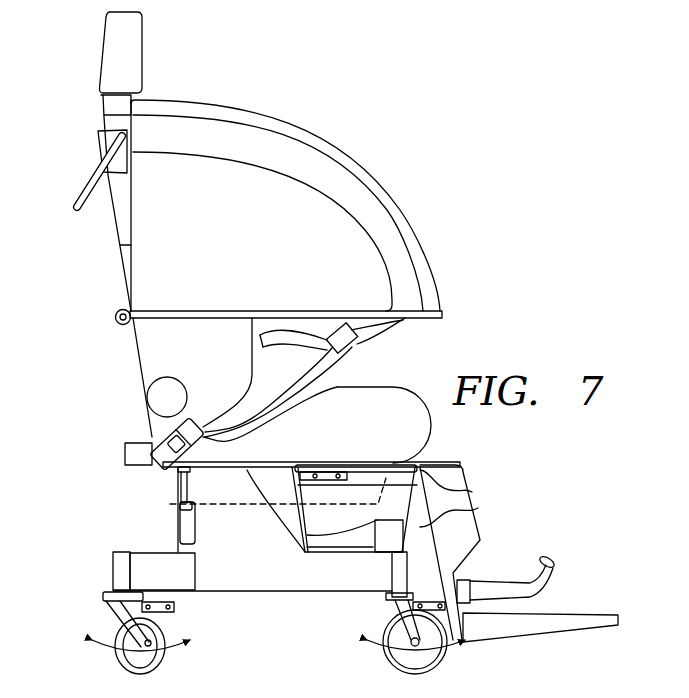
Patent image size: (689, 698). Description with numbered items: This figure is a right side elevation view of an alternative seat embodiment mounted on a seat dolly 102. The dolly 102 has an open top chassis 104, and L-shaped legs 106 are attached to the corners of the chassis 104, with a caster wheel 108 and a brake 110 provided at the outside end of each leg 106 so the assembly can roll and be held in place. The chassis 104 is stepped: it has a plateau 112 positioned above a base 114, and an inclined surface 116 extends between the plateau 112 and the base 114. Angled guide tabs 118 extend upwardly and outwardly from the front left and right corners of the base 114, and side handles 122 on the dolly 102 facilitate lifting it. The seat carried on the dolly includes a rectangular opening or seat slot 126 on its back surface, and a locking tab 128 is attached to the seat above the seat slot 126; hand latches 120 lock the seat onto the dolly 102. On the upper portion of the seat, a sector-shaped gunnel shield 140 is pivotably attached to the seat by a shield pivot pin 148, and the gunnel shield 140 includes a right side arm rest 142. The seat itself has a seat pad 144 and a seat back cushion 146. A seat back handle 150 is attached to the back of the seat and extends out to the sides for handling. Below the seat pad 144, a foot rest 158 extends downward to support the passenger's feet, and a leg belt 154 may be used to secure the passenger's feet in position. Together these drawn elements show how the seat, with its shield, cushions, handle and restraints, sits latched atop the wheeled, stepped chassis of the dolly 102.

The seat dolly 102 is at (168, 506).
The open top chassis 104 is at (320, 595).
The L-shaped leg 106 is at (145, 572).
The caster wheel 108 is at (120, 617).
The brake 110 is at (170, 607).
The plateau 112 is at (213, 476).
The base 114 is at (327, 555).
The inclined surface 116 is at (260, 503).
The angled guide tab 118 is at (473, 518).
The hand latch 120 is at (190, 524).
The side handle 122 is at (460, 490).
The seat slot 126 is at (352, 498).
The locking tab 128 is at (125, 451).
The gunnel shield 140 is at (328, 152).
The right side arm rest 142 is at (302, 310).
The seat pad 144 is at (347, 398).
The seat back cushion 146 is at (200, 367).
The shield pivot pin 148 is at (114, 317).
The seat back handle 150 is at (85, 193).
The leg belt 154 is at (522, 565).
The foot rest 158 is at (510, 630).